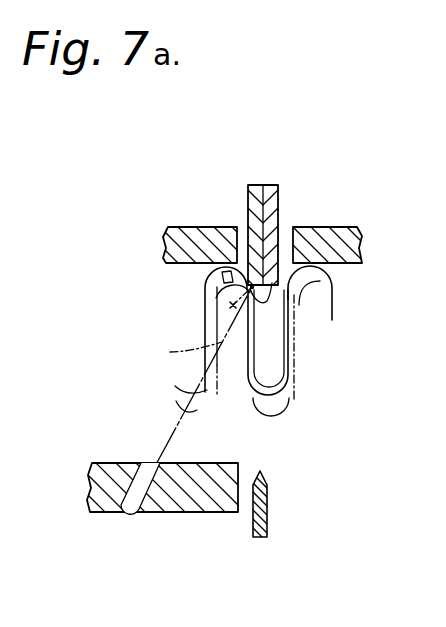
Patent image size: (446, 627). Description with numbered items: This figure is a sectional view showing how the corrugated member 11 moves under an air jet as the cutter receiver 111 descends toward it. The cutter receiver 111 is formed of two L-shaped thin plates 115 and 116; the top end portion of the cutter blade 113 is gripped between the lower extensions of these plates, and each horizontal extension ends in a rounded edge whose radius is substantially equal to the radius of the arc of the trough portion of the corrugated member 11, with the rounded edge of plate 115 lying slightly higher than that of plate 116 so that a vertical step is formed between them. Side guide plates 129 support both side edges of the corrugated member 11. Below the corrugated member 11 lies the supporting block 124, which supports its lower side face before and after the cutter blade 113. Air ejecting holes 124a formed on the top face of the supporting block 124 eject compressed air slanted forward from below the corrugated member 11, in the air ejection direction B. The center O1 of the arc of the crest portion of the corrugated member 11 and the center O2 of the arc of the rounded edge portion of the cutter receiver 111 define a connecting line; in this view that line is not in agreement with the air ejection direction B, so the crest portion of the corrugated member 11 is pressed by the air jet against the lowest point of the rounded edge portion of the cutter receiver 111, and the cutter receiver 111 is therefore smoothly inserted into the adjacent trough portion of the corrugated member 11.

The corrugated member 11 is at (205, 330).
The cutter receiver 111 is at (288, 207).
The cutter blade 113 is at (268, 507).
The L-shaped thin plate 115 is at (248, 200).
The L-shaped thin plate 116 is at (278, 195).
The supporting block 124 is at (205, 503).
The air ejecting holes 124a is at (132, 506).
The side guide plates 129 is at (190, 238).
The center of the arc of the crest portion O1 is at (233, 305).
The center of the arc of the rounded edge portion O2 is at (252, 287).
The air ejection direction B is at (138, 462).